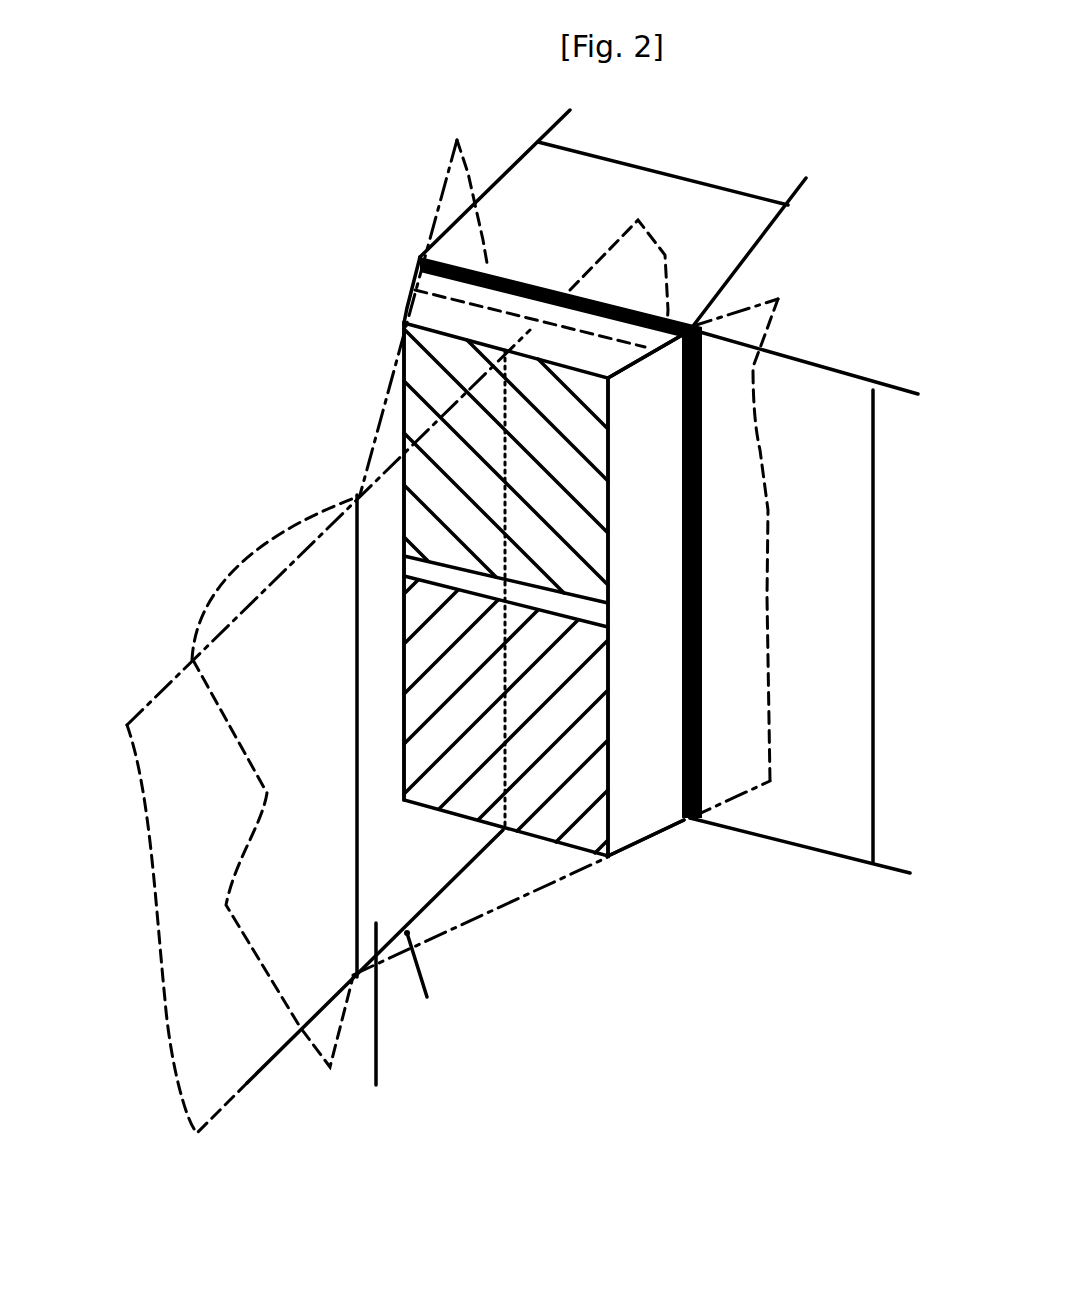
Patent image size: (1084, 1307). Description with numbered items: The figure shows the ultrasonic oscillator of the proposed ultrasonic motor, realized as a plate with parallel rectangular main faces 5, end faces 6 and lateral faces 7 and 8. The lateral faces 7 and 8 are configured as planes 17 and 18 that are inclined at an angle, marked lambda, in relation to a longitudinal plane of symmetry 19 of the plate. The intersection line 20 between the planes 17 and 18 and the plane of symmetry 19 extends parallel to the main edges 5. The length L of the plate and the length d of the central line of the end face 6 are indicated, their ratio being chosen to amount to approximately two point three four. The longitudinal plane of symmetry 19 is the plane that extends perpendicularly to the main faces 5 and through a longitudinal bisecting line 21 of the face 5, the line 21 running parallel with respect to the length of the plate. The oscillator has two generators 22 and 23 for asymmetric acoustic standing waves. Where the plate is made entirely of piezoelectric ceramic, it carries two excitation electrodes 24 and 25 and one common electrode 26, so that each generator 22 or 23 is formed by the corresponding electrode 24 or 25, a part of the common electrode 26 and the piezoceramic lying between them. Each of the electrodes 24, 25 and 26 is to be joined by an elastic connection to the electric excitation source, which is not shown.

The main faces 5 is at (561, 710).
The end faces 6 is at (478, 318).
The lateral face 7 is at (401, 725).
The lateral face 8 is at (650, 651).
The plane 17 is at (457, 203).
The plane 18 is at (248, 573).
The longitudinal plane of symmetry 19 is at (223, 1043).
The intersection line 20 is at (353, 873).
The longitudinal bisecting line 21 is at (517, 470).
The generator 22 is at (650, 422).
The generator 23 is at (647, 707).
The excitation electrode 24 is at (477, 475).
The excitation electrode 25 is at (445, 683).
The common electrode 26 is at (704, 533).